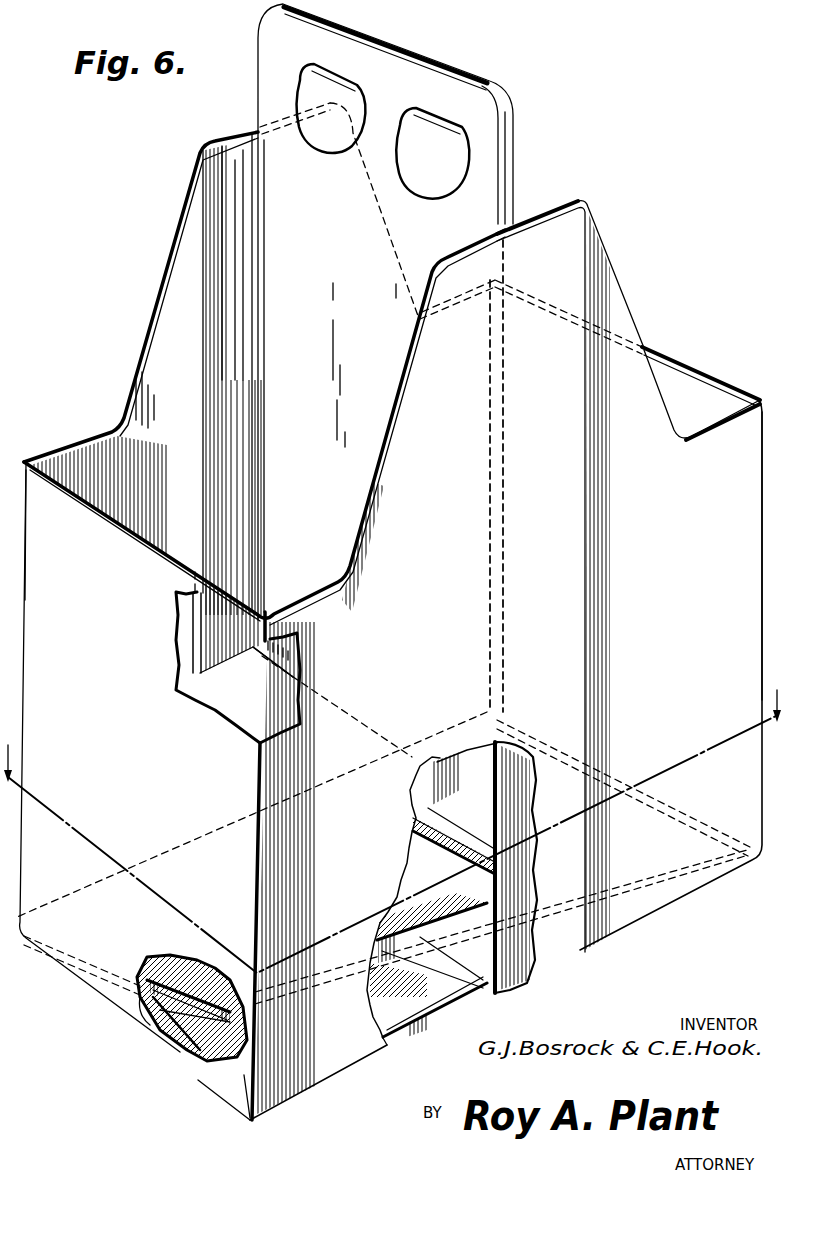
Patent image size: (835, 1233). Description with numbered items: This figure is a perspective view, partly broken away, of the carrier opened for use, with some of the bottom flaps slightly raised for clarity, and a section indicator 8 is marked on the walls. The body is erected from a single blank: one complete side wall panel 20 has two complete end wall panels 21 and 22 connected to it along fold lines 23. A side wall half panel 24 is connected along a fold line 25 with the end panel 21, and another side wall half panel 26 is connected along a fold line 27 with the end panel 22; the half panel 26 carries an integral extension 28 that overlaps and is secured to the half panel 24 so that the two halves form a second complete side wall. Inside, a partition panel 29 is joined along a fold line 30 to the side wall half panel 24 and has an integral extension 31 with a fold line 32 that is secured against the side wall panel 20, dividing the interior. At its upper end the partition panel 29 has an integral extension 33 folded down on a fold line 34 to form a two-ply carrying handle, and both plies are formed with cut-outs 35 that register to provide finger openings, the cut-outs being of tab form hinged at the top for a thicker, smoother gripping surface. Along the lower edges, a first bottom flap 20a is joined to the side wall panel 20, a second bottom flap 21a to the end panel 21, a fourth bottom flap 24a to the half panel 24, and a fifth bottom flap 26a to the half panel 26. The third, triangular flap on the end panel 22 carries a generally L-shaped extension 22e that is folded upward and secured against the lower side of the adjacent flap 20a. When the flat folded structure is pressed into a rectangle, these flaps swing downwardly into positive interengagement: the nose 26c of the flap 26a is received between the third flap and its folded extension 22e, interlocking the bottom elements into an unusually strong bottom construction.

The section line 8- 8 is at (391, 821).
The side wall panel 20 is at (334, 542).
The bottom flap 20a is at (400, 907).
The end wall panel 21 is at (688, 380).
The bottom flap 21a is at (430, 838).
The end wall panel 22 is at (410, 976).
The extension 22e is at (197, 1053).
The fold lines 23 is at (28, 549).
The side wall half panel 24 is at (515, 815).
The bottom flap 24a is at (460, 930).
The fold line 25 is at (763, 608).
The side wall half panel 26 is at (459, 495).
The bottom flap 26a is at (393, 1043).
The nose 26c is at (140, 1007).
The fold line 27 is at (255, 797).
The extension 28 is at (526, 476).
The partition panel 29 is at (445, 792).
The fold line 30 is at (503, 460).
The extension 31 is at (203, 342).
The fold line 32 is at (258, 291).
The extension 33 is at (513, 145).
The fold line 34 is at (390, 36).
The cut-outs 35 is at (413, 110).